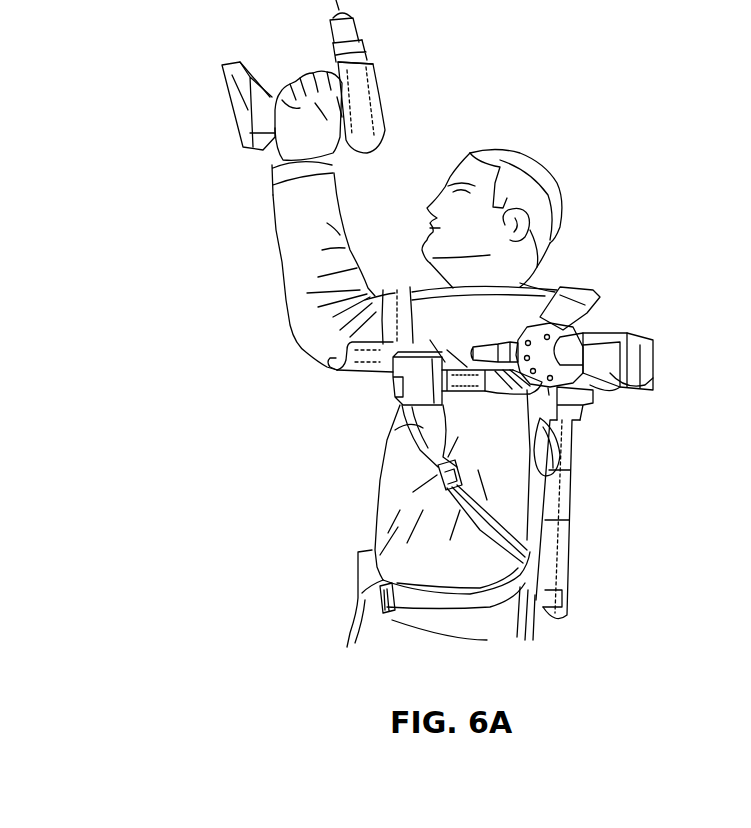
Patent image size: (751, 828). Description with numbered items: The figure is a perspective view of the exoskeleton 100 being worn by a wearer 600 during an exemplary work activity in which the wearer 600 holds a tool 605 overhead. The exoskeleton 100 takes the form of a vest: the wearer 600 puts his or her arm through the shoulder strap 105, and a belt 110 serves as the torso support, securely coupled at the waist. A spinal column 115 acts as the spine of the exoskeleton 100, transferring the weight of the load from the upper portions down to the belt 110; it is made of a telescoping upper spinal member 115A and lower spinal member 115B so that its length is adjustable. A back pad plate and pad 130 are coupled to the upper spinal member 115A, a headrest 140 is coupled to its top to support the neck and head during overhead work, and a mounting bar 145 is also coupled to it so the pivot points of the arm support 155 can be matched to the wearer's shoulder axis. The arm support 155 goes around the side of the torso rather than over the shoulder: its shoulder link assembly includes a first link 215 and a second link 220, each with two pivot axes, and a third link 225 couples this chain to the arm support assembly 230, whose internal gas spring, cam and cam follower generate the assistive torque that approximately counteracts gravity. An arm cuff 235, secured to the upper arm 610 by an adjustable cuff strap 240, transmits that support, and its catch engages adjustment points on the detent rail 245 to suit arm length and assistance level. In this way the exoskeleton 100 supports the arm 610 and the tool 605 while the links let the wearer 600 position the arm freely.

The exoskeleton 100 is at (578, 478).
The first shoulder strap 105 is at (422, 429).
The belt 110 is at (540, 628).
The spinal column 115 is at (556, 564).
The upper spinal member 115A is at (590, 488).
The lower spinal member 115B is at (580, 518).
The back pad plate and pad 130 is at (544, 448).
The headrest 140 is at (590, 293).
The mounting bar 145 is at (594, 404).
The arm support 155 is at (534, 327).
The first link 215 is at (636, 385).
The second link 220 is at (655, 342).
The third link 225 is at (600, 331).
The arm support assembly 230 is at (548, 386).
The arm cuff 235 is at (370, 373).
The cuff strap 240 is at (388, 290).
The detent rail 245 is at (472, 380).
The wearer 600 is at (547, 186).
The tool 605 is at (377, 87).
The arm 610 is at (302, 286).